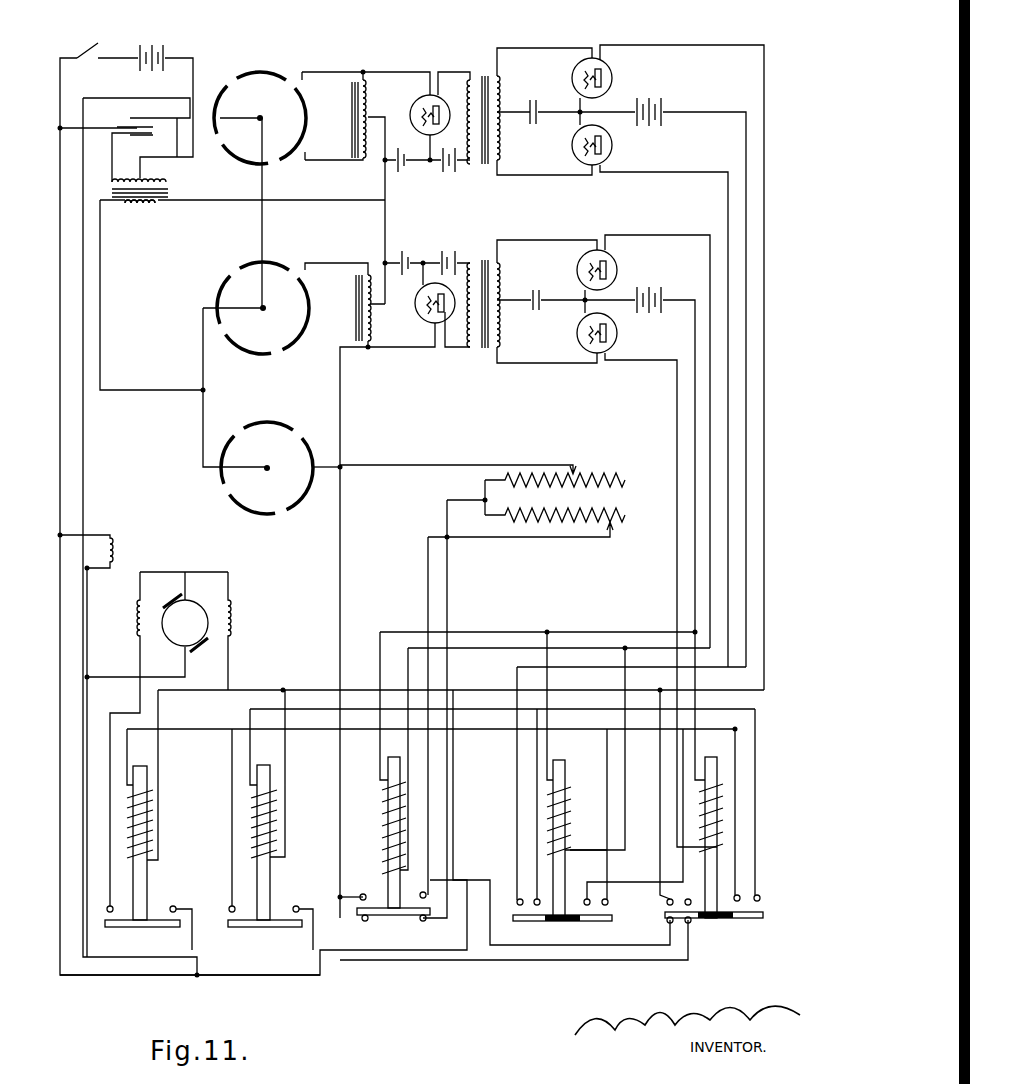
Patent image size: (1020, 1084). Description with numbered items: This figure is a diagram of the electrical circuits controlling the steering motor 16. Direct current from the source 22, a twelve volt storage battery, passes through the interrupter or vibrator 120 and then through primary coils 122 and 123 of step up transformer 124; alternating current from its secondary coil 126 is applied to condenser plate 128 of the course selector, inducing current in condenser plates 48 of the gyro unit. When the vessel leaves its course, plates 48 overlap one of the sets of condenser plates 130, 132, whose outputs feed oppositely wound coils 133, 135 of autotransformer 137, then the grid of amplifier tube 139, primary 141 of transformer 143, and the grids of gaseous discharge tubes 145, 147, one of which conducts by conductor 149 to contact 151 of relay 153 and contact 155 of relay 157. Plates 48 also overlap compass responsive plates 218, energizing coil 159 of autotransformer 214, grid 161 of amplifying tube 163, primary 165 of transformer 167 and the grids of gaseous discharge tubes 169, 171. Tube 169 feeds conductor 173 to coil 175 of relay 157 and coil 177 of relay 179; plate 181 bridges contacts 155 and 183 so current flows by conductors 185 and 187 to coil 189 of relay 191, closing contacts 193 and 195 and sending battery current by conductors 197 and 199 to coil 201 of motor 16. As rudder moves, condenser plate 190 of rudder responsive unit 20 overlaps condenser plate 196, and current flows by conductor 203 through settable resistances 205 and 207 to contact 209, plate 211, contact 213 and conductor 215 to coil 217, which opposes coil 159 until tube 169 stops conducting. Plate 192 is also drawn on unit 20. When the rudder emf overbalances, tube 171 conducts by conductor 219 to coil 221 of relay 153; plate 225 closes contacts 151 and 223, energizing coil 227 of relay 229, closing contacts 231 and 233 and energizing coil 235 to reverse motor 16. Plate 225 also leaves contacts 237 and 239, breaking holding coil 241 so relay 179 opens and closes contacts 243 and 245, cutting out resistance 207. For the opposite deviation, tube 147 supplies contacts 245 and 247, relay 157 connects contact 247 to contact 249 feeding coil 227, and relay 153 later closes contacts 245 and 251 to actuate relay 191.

The source 22 is at (150, 44).
The interrupter or vibrator 120 is at (135, 118).
The primary coil 122 is at (120, 180).
The primary coil 123 is at (170, 180).
The step up transformer 124 is at (166, 204).
The secondary coil 126 is at (132, 206).
The condenser plates 48 is at (245, 72).
The condenser plates 130 is at (296, 99).
The condenser plates 132 is at (307, 128).
The coil 133 is at (360, 74).
The autotransformer 137 is at (357, 121).
The amplifier tube 139 is at (418, 102).
The coil 135 is at (385, 157).
The primary 141 is at (468, 75).
The transformer 143 is at (490, 72).
The gaseous discharge tube 145 is at (572, 80).
The gaseous discharge tube 147 is at (572, 149).
The conductor 149 is at (664, 45).
The condenser plate 128 is at (216, 293).
The condenser plates 218 is at (317, 303).
The autotransformer 214 is at (358, 293).
The coil 217 is at (373, 328).
The coil 159 is at (375, 270).
The grid 161 is at (429, 266).
The amplifying tube 163 is at (424, 338).
The primary 165 is at (470, 342).
The transformer 167 is at (490, 350).
The gaseous discharge tube 169 is at (577, 274).
The gaseous discharge tube 171 is at (577, 338).
The conductor 173 is at (655, 228).
The conductor 219 is at (677, 388).
The rudder responsive unit 20 is at (267, 468).
The condenser plate 196 is at (310, 439).
The electrode 192 is at (217, 488).
The condenser plate 190 is at (282, 515).
The conductor 203 is at (395, 464).
The settable resistance 205 is at (590, 468).
The settable resistance 207 is at (550, 522).
The steering motor 16 is at (143, 745).
The coil 201 is at (235, 613).
The coil 235 is at (137, 628).
The relay 229 is at (147, 772).
The coil 227 is at (157, 798).
The conductor 199 is at (232, 826).
The contact 231 is at (173, 906).
The contact 195 is at (232, 906).
The contact 233 is at (108, 906).
The relay 191 is at (268, 767).
The coil 189 is at (275, 794).
The contact 193 is at (297, 904).
The conductor 197 is at (223, 976).
The relay 179 is at (390, 775).
The holding coil 241 is at (382, 868).
The conductor 215 is at (341, 822).
The contact 213 is at (362, 895).
The contact 209 is at (442, 861).
The contact 245 is at (365, 922).
The plate 211 is at (393, 918).
The contact 243 is at (425, 922).
The relay 157 is at (557, 762).
The coil 175 is at (547, 792).
The coil 177 is at (435, 800).
The conductor 187 is at (477, 724).
The conductor 185 is at (517, 818).
The contact 183 is at (518, 900).
The plate 181 is at (523, 921).
The contact 155 is at (540, 921).
The contact 249 is at (585, 921).
The contact 247 is at (597, 897).
The contact 151 is at (665, 886).
The contact 223 is at (687, 900).
The relay 153 is at (707, 757).
The coil 221 is at (725, 796).
The contact 251 is at (758, 898).
The plate 225 is at (730, 920).
The contact 239 is at (692, 925).
The contact 237 is at (668, 925).